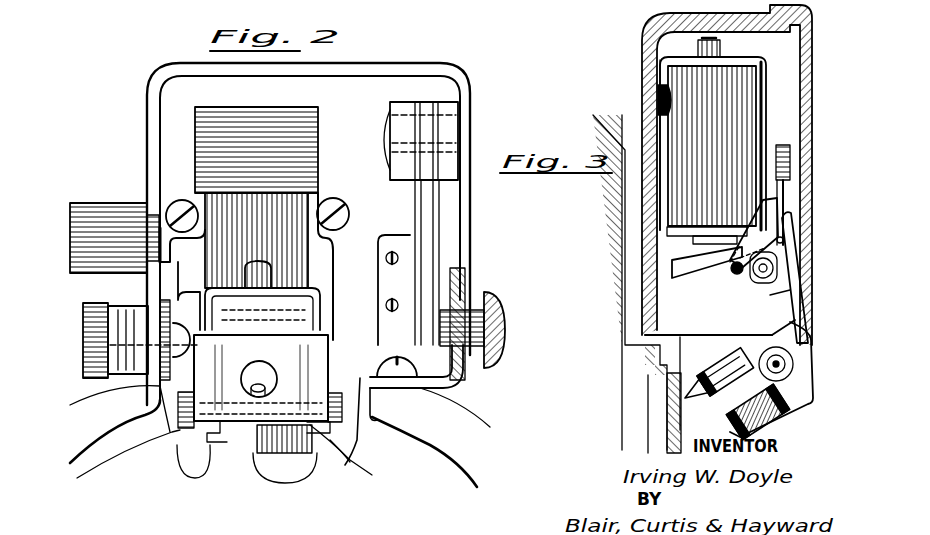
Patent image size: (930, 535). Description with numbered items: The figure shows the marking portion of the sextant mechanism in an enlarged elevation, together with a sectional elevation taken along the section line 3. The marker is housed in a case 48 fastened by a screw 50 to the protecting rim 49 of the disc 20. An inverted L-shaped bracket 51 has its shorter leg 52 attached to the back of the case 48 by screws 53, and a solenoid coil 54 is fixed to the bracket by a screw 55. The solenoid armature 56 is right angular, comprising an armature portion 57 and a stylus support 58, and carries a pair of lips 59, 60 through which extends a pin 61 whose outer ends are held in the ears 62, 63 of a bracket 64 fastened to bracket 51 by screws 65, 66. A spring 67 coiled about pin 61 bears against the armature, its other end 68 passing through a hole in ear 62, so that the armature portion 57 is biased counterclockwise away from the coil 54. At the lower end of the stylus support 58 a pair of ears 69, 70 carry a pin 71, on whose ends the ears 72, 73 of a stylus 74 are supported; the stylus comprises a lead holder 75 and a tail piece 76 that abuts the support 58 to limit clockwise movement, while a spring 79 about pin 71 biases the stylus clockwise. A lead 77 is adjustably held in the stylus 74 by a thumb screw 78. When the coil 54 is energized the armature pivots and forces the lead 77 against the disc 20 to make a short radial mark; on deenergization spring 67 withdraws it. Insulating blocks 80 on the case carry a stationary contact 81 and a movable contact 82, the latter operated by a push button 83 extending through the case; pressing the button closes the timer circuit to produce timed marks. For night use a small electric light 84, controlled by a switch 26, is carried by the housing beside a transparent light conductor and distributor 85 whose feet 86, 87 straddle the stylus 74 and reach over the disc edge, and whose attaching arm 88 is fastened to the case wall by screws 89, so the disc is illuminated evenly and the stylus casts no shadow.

In FIG. 2, the section line 3— 3 is at (180, 90).
In FIG. 2, the disc 20 is at (281, 443).
In FIG. 3, the disc 20 is at (650, 398).
In FIG. 3, the switch 26 is at (626, 79).
In FIG. 2, the case 48 is at (452, 68).
In FIG. 3, the case 48 is at (648, 33).
In FIG. 2, the protecting rim 49 is at (485, 437).
In FIG. 2, the screw 50 is at (402, 372).
In FIG. 2, the inverted L-shaped bracket 51 is at (320, 122).
In FIG. 3, the inverted L-shaped bracket 51 is at (752, 60).
In FIG. 3, the shorter leg 52 is at (660, 70).
In FIG. 3, the screws 53 is at (655, 93).
In FIG. 3, the solenoid coil 54 is at (745, 126).
In FIG. 3, the screw 55 is at (722, 44).
In FIG. 3, the solenoid armature 56 is at (795, 270).
In FIG. 3, the armature portion 57 is at (702, 275).
In FIG. 3, the stylus support 58 is at (800, 302).
In FIG. 2, the lip 59 is at (260, 381).
In FIG. 3, the lip 59 is at (762, 284).
In FIG. 2, the lip 60 is at (318, 302).
In FIG. 2, the pin 61 is at (268, 322).
In FIG. 3, the pin 61 is at (745, 280).
In FIG. 2, the ear 62 is at (206, 298).
In FIG. 3, the ear 62 is at (757, 222).
In FIG. 2, the ear 63 is at (315, 312).
In FIG. 2, the bracket 64 is at (300, 188).
In FIG. 3, the bracket 64 is at (784, 195).
In FIG. 2, the screw 65 is at (183, 200).
In FIG. 3, the screw 65 is at (784, 145).
In FIG. 2, the screw 66 is at (340, 228).
In FIG. 3, the spring 67 is at (730, 275).
In FIG. 3, the spring end 68 is at (721, 278).
In FIG. 2, the ear 69 is at (197, 430).
In FIG. 2, the ear 70 is at (318, 442).
In FIG. 2, the pin 71 is at (280, 405).
In FIG. 3, the pin 71 is at (795, 372).
In FIG. 2, the ear 72 is at (203, 427).
In FIG. 2, the ear 73 is at (353, 440).
In FIG. 2, the stylus 74 is at (257, 446).
In FIG. 3, the stylus 74 is at (737, 340).
In FIG. 3, the lead holder 75 is at (723, 398).
In FIG. 3, the tail piece 76 is at (790, 302).
In FIG. 3, the lead 77 is at (691, 401).
In FIG. 3, the thumb screw 78 is at (808, 402).
In FIG. 3, the spring 79 is at (787, 378).
In FIG. 2, the insulating blocks 80 is at (400, 104).
In FIG. 2, the stationary contact 81 is at (420, 245).
In FIG. 2, the movable contact 82 is at (440, 256).
In FIG. 2, the push button 83 is at (500, 302).
In FIG. 2, the electric light 84 is at (148, 378).
In FIG. 2, the light conductor and distributor 85 is at (180, 386).
In FIG. 2, the foot 86 is at (195, 478).
In FIG. 2, the foot 87 is at (350, 462).
In FIG. 2, the attaching arm 88 is at (384, 268).
In FIG. 2, the screws 89 is at (393, 291).